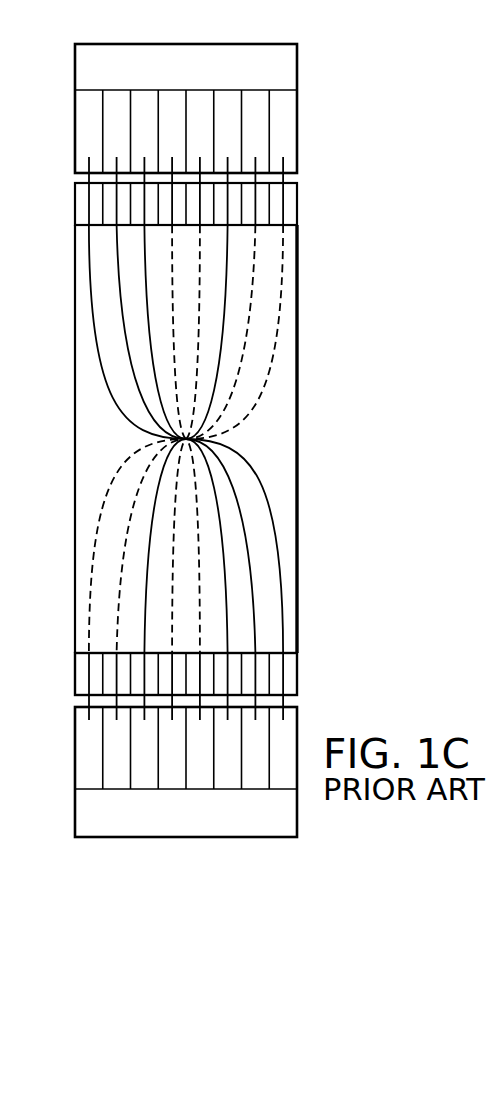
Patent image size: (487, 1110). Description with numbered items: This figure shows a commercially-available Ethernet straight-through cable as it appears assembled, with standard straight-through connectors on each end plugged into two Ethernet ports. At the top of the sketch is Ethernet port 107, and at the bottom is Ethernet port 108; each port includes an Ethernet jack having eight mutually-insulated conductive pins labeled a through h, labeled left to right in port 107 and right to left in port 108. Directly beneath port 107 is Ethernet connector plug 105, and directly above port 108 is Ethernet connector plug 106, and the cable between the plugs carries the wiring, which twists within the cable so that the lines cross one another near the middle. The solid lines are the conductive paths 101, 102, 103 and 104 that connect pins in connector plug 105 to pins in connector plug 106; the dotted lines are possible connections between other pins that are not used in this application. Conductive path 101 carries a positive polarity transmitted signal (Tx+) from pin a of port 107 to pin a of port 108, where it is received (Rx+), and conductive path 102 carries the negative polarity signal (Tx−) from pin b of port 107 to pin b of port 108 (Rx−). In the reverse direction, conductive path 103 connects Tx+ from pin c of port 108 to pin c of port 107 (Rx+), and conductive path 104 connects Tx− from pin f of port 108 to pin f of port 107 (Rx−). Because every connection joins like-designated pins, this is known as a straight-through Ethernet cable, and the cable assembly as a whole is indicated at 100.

The ethernet port (second) 100 is at (297, 722).
The conductive path 101 is at (90, 292).
The conductive path 102 is at (120, 330).
The conductive path 103 is at (152, 370).
The conductive path 104 is at (225, 327).
The Ethernet connector plug 105 is at (298, 206).
The Ethernet connector plug 106 is at (74, 675).
The Ethernet port 107 is at (297, 70).
The Ethernet port 108 is at (297, 819).